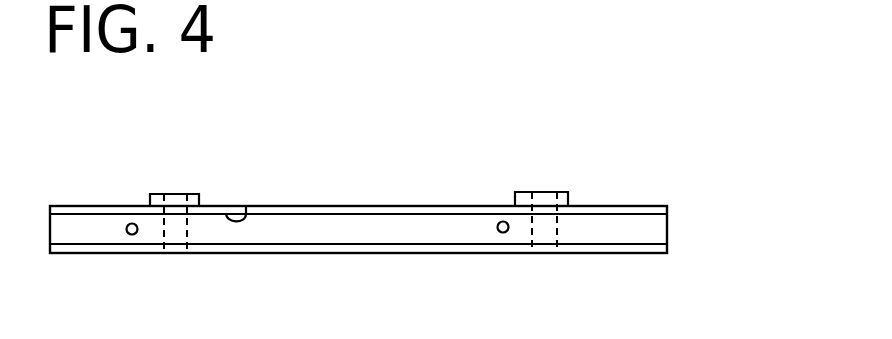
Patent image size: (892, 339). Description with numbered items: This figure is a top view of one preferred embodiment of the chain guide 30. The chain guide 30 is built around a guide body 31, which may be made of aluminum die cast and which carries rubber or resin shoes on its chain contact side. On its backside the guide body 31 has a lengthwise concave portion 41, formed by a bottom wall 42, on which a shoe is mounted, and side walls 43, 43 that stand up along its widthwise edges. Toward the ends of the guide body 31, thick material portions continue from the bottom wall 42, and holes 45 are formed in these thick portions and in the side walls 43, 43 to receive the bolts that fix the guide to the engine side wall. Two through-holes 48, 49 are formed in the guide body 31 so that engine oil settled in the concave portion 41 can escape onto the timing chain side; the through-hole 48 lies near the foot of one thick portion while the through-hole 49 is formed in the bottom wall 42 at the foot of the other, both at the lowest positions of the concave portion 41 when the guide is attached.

The chain guide 30 is at (412, 160).
The guide body 31 is at (448, 204).
The concave portion 41 is at (246, 206).
The bottom wall 42 is at (243, 237).
The side walls 43 is at (293, 214).
The holes 45 is at (164, 240).
The through-hole 48 is at (132, 235).
The through-hole 49 is at (502, 233).